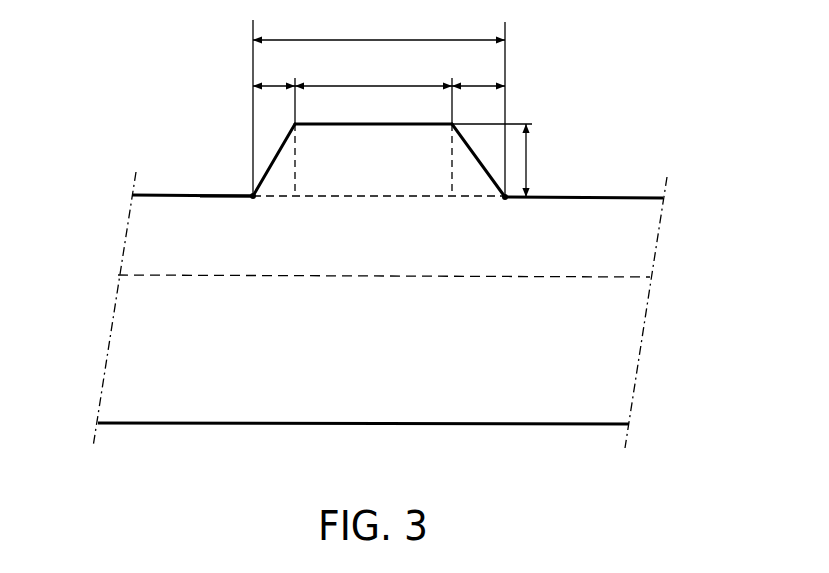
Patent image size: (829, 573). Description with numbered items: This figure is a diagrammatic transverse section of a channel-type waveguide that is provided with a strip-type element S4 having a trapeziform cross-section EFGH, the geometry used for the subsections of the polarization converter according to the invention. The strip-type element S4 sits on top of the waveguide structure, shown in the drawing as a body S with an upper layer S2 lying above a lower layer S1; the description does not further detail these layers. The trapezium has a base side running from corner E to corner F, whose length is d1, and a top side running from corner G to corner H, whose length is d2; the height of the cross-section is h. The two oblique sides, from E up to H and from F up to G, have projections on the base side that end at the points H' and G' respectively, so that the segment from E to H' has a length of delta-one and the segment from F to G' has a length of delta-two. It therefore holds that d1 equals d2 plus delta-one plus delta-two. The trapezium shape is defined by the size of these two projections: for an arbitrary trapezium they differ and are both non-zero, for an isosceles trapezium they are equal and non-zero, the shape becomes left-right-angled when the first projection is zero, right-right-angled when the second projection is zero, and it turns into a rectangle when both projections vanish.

The substrate S is at (672, 198).
The first substrate layer S1 is at (153, 327).
The second substrate layer S2 is at (160, 222).
The strip-type element S4 is at (337, 167).
The corner point H of cross-section H is at (236, 98).
The corner point G of cross-section G is at (513, 99).
The corner point E of cross-section E is at (258, 200).
The corner point F of cross-section F is at (500, 200).
The projection point H' is at (322, 190).
The projection point G' is at (423, 190).
The length of base side EF d1 is at (379, 26).
The length of top side GH d2 is at (373, 73).
The height of cross-section h is at (535, 160).